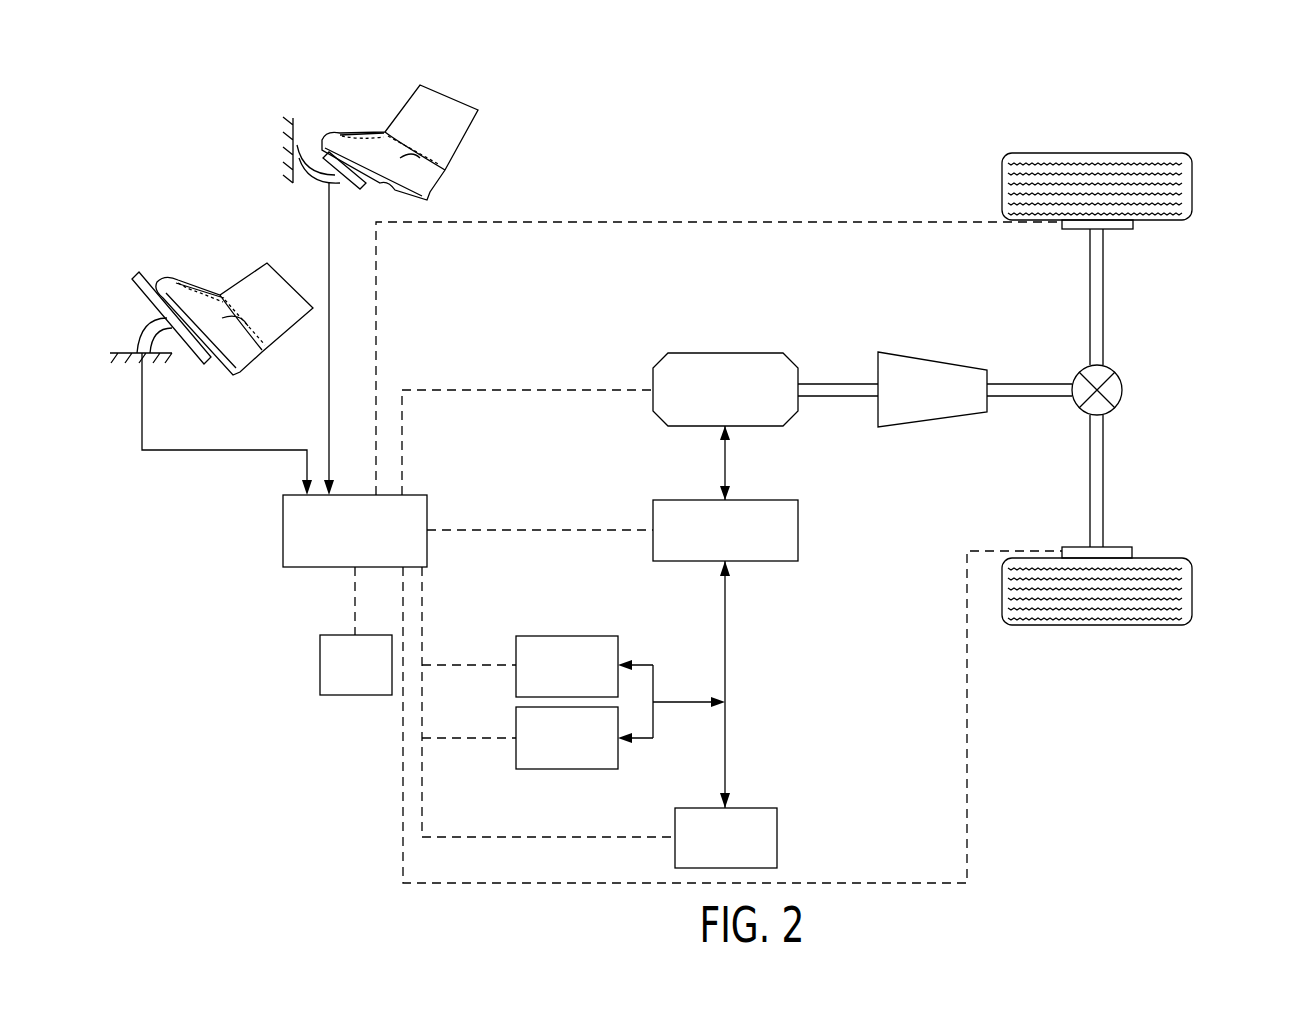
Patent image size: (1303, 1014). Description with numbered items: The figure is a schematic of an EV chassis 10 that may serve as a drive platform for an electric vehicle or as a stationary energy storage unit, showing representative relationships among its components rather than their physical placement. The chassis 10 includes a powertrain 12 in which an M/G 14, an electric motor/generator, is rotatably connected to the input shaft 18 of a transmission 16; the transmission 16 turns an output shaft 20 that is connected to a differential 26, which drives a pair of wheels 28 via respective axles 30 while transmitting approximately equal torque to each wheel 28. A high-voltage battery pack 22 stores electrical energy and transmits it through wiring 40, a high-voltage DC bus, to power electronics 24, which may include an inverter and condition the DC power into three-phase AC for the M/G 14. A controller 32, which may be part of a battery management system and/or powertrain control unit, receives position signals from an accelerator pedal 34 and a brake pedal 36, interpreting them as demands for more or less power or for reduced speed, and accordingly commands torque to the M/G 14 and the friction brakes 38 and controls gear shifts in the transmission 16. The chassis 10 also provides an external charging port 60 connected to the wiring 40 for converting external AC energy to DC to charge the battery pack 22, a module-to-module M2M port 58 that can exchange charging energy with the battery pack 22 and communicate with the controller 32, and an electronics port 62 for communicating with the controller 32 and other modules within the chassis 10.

The chassis 10 is at (898, 108).
The powertrain 12 is at (762, 312).
The M/G 14 is at (653, 372).
The transmission 16 is at (925, 372).
The input shaft 18 is at (838, 384).
The output shaft 20 is at (1022, 384).
The battery pack 22 is at (675, 820).
The power electronics 24 is at (653, 516).
The differential 26 is at (1124, 388).
The wheels 28 is at (1192, 188).
The axles 30 is at (1104, 318).
The controller 32 is at (283, 528).
The accelerator pedal 34 is at (207, 256).
The brake pedal 36 is at (367, 94).
The friction brakes 38 is at (1133, 225).
The wiring 40 is at (727, 605).
The M2M port 58 is at (516, 652).
The charging port 60 is at (516, 755).
The electronics port 62 is at (320, 665).